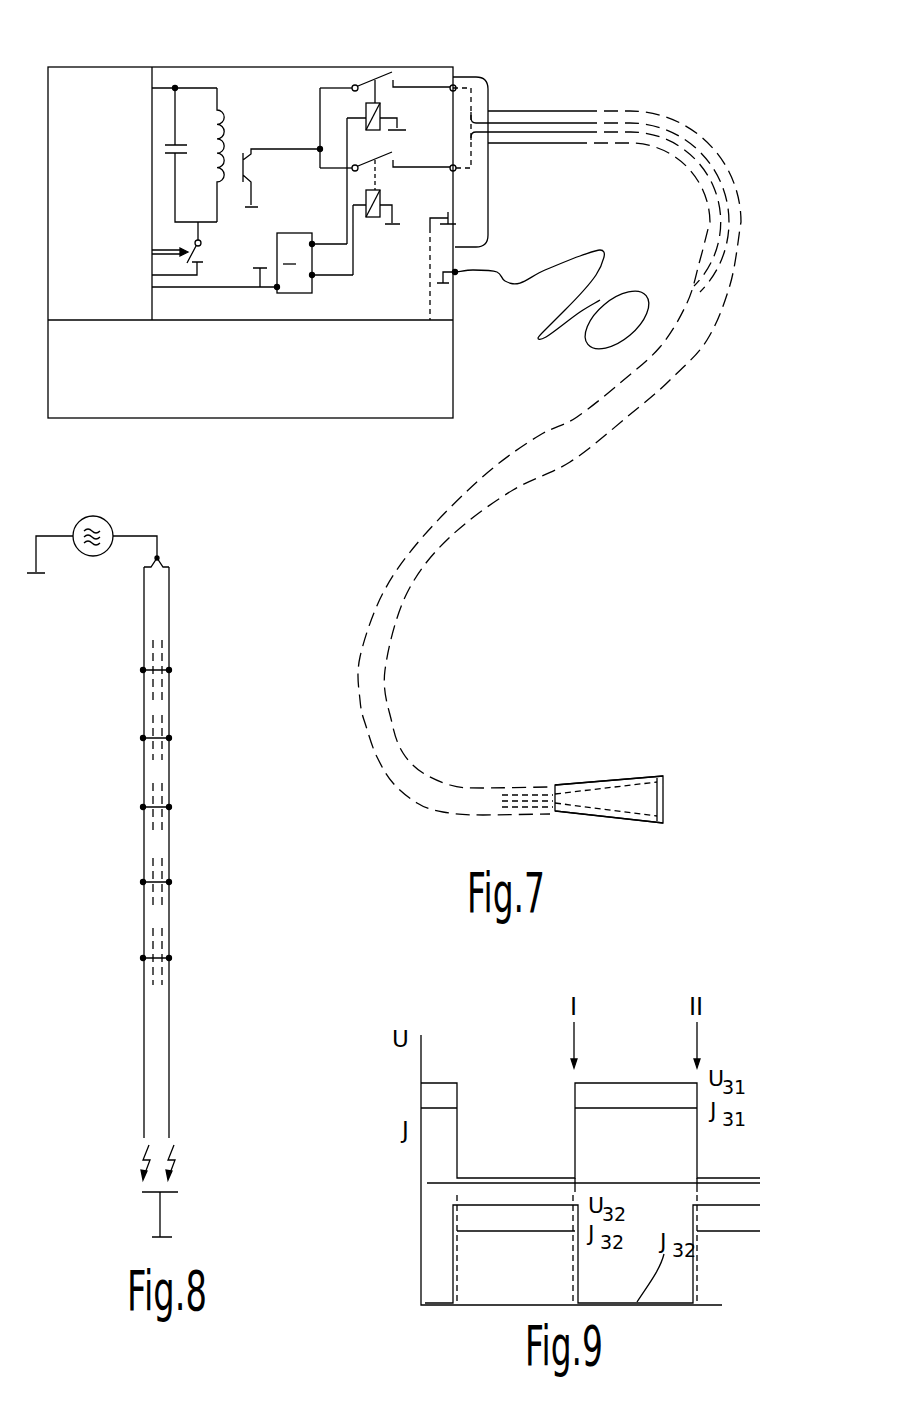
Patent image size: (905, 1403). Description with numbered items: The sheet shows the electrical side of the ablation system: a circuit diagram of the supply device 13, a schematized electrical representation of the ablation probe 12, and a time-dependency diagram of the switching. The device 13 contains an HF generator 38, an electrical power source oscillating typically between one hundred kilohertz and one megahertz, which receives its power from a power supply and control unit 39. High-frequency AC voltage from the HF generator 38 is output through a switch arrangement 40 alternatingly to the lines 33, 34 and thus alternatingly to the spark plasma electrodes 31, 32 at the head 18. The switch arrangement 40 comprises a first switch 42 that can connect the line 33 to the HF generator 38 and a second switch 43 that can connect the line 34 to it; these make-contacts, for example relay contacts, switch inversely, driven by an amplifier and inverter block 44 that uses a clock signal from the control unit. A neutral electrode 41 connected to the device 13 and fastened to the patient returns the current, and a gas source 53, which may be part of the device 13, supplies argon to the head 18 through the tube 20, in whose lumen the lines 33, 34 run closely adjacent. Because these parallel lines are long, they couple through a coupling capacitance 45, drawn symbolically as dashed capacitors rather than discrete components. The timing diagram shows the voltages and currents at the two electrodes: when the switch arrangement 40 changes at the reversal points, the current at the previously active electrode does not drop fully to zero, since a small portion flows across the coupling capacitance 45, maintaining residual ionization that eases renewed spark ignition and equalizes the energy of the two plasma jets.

In FIG. 7, the ablation probe 12 is at (634, 623).
In FIG. 7, the device 13 is at (454, 50).
In FIG. 7, the head 18 is at (614, 770).
In FIG. 7, the tube 20 is at (704, 345).
In FIG. 7, the spark plasma electrode 31 is at (656, 822).
In FIG. 8, the spark plasma electrode 31 is at (142, 1130).
In FIG. 7, the spark plasma electrode 32 is at (657, 777).
In FIG. 8, the spark plasma electrode 32 is at (170, 1130).
In FIG. 7, the line 33 is at (534, 134).
In FIG. 8, the line 33 is at (144, 592).
In FIG. 7, the line 34 is at (531, 124).
In FIG. 8, the line 34 is at (170, 595).
In FIG. 7, the HF generator 38 is at (216, 80).
In FIG. 8, the HF generator 38 is at (116, 510).
In FIG. 7, the power supply and control unit 39 is at (110, 199).
In FIG. 7, the switch arrangement 40 is at (366, 78).
In FIG. 8, the switch arrangement 40 is at (175, 552).
In FIG. 7, the neutral electrode 41 is at (623, 300).
In FIG. 7, the first switch 42 is at (404, 153).
In FIG. 7, the second switch 43 is at (402, 80).
In FIG. 7, the amplifier and inverter block 44 is at (291, 233).
In FIG. 8, the coupling capacitance 45 is at (163, 832).
In FIG. 7, the gas source 53 is at (272, 382).